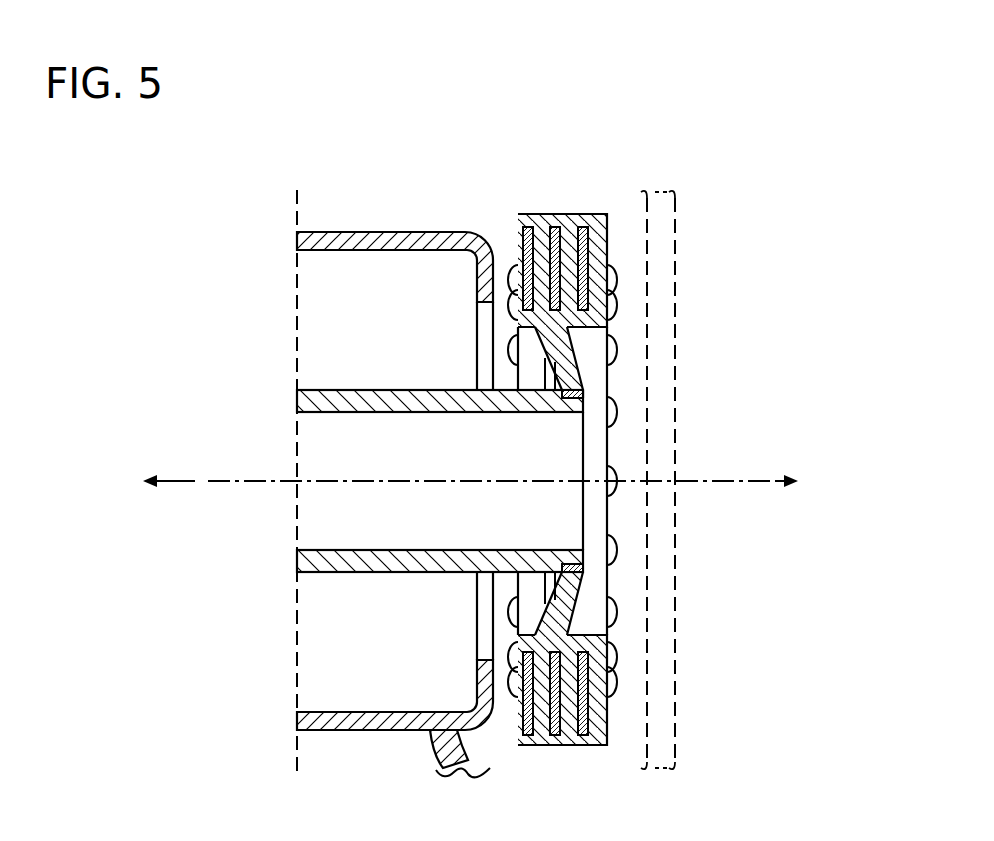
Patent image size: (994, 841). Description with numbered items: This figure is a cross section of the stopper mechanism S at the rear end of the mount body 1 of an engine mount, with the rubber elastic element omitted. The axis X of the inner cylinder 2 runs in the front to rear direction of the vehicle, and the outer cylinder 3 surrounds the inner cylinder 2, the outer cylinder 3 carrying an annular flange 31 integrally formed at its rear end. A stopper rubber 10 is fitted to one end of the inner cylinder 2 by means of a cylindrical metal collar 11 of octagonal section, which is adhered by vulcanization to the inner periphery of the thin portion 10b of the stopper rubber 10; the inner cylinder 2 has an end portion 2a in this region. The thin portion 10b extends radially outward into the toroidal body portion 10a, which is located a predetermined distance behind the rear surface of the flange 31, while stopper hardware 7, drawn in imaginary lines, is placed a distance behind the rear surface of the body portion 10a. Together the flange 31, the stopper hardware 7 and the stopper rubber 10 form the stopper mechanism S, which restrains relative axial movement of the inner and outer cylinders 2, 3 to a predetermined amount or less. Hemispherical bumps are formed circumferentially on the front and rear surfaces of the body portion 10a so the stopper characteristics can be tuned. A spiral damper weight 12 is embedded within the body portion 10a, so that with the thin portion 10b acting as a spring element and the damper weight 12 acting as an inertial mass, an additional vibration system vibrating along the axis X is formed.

The mount body 1 is at (395, 470).
The outer cylinder 3 is at (355, 231).
The flange 31 is at (494, 300).
The inner cylinder 2 is at (389, 388).
The shaft end portion 2a is at (556, 400).
The stopper rubber 10 is at (658, 454).
The toroidal body portion 10a is at (608, 240).
The thin portion 10b is at (558, 353).
The collar 11 is at (584, 393).
The damper weight 12 is at (553, 230).
The stopper hardware 7 is at (678, 603).
The stopper mechanism S is at (615, 118).
The axis X is at (225, 478).